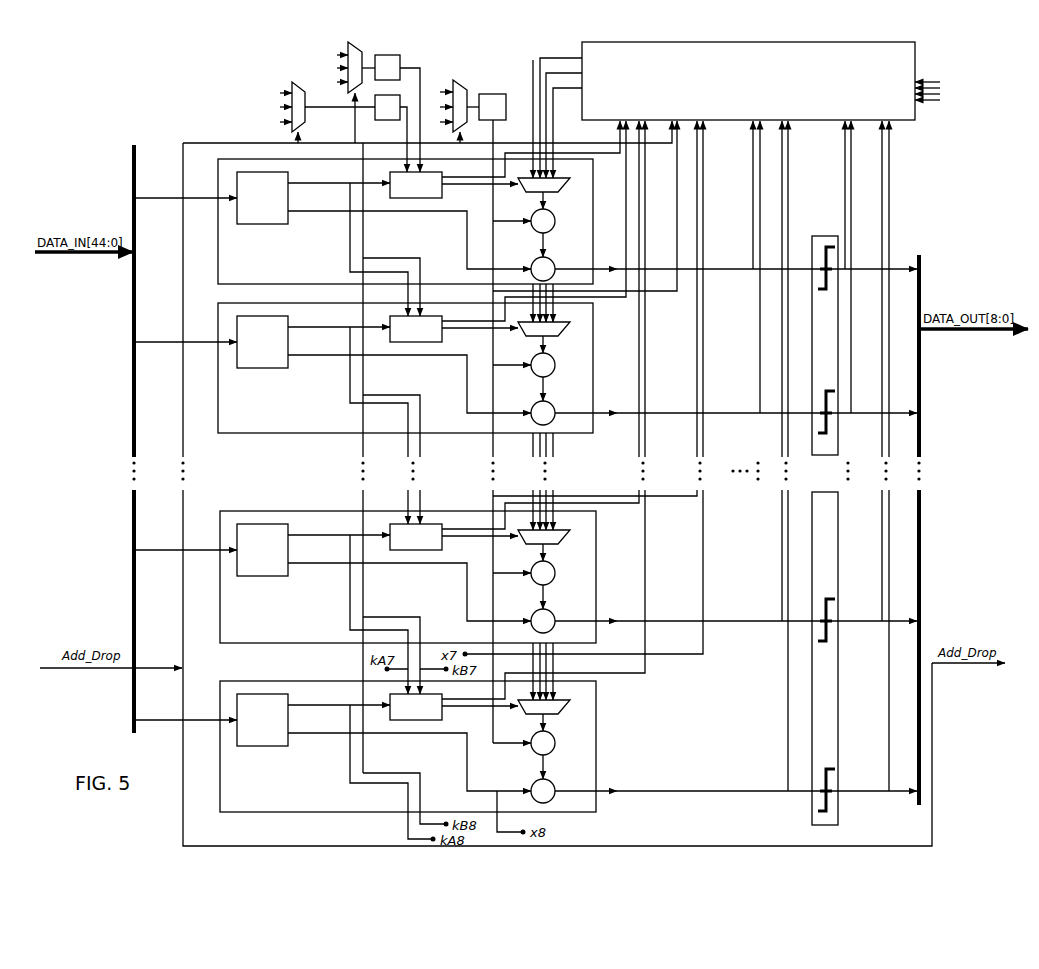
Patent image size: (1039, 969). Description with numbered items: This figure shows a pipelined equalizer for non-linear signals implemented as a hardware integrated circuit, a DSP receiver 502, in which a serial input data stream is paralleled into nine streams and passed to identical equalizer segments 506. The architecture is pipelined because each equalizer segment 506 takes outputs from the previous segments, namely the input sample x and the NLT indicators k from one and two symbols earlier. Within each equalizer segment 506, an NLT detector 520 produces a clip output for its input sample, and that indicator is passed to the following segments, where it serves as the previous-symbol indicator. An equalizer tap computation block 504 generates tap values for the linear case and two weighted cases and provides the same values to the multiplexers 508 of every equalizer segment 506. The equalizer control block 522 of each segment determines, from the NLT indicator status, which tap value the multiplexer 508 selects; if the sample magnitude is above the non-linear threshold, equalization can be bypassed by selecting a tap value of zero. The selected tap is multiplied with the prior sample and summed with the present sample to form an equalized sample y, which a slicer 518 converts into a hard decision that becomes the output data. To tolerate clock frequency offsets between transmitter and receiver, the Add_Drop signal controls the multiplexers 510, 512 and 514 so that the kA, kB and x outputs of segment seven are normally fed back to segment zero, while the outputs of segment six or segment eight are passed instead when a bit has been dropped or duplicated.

The DSP receiver 502 is at (957, 169).
The equalizer tap computation block 504 is at (916, 74).
The equalizer segment 506 is at (220, 263).
The multiplexer 508 is at (557, 186).
The multiplexer 510 is at (292, 84).
The multiplexer 512 is at (360, 54).
The multiplexer 514 is at (466, 87).
The slicer 518 is at (830, 236).
The NLT detector 520 is at (279, 224).
The equalizer control block 522 is at (426, 199).